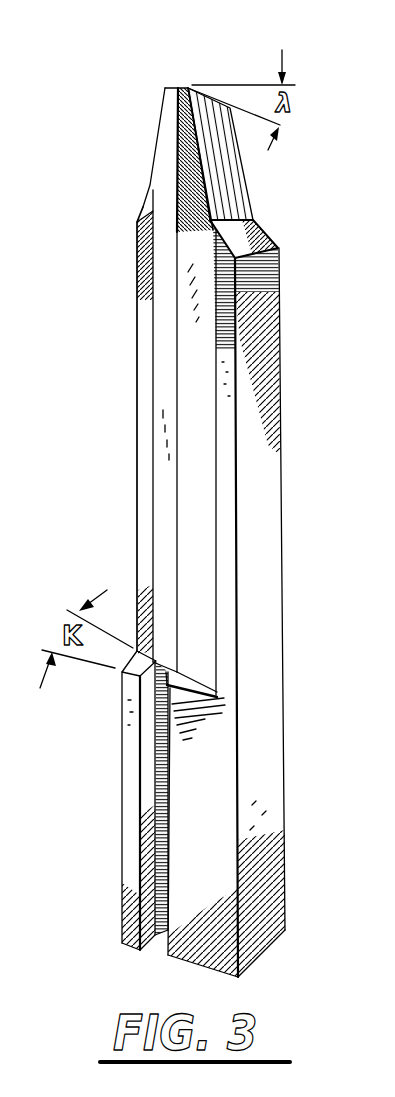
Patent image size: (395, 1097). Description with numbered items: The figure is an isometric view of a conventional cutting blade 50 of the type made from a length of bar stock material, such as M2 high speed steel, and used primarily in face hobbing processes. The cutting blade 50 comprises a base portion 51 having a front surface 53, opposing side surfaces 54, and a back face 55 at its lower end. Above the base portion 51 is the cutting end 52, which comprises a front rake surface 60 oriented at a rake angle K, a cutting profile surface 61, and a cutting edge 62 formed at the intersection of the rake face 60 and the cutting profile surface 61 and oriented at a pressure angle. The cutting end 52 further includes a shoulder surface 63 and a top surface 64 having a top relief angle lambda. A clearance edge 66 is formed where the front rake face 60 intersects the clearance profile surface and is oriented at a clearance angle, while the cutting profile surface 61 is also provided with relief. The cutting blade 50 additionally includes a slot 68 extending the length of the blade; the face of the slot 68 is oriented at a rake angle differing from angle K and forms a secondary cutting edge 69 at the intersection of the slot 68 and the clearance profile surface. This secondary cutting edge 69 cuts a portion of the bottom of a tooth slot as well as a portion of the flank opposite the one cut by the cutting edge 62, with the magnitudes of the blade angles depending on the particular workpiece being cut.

The cutting blade 50 is at (193, 493).
The base portion 51 is at (270, 832).
The cutting end 52 is at (107, 359).
The front surface 53 is at (223, 587).
The side surfaces 54 is at (265, 550).
The back face 55 is at (280, 873).
The front rake surface 60 is at (148, 457).
The cutting profile surface 61 is at (222, 164).
The cutting edge 62 is at (212, 185).
The shoulder surface 63 is at (270, 226).
The top surface 64 is at (177, 87).
The clearance edge 66 is at (143, 195).
The slot 68 is at (163, 258).
The secondary cutting edge 69 is at (167, 112).